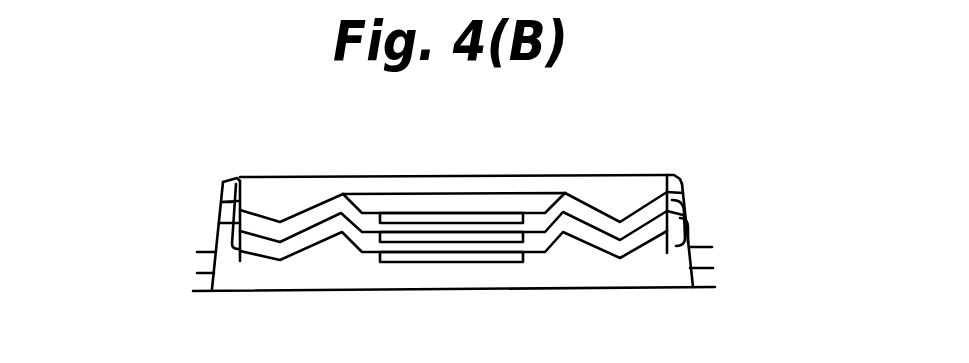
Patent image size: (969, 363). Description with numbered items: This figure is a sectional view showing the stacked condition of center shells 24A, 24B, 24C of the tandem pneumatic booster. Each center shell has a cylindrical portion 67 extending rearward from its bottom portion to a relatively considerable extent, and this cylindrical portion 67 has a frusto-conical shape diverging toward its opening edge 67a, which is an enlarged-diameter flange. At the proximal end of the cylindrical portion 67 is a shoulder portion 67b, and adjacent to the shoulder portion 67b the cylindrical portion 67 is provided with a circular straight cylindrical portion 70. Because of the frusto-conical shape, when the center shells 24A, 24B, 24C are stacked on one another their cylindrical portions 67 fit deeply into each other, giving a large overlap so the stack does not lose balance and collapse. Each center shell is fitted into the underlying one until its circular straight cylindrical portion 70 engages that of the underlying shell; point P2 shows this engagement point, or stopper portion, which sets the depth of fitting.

The cylindrical portion 67 is at (213, 217).
The opening edge 67a is at (186, 252).
The shoulder portion 67b is at (227, 182).
The center shell 24A is at (620, 248).
The center shell 24B is at (597, 222).
The center shell 24C is at (537, 203).
The circular straight cylindrical portion 70 is at (683, 193).
The engagement point P2 is at (232, 200).